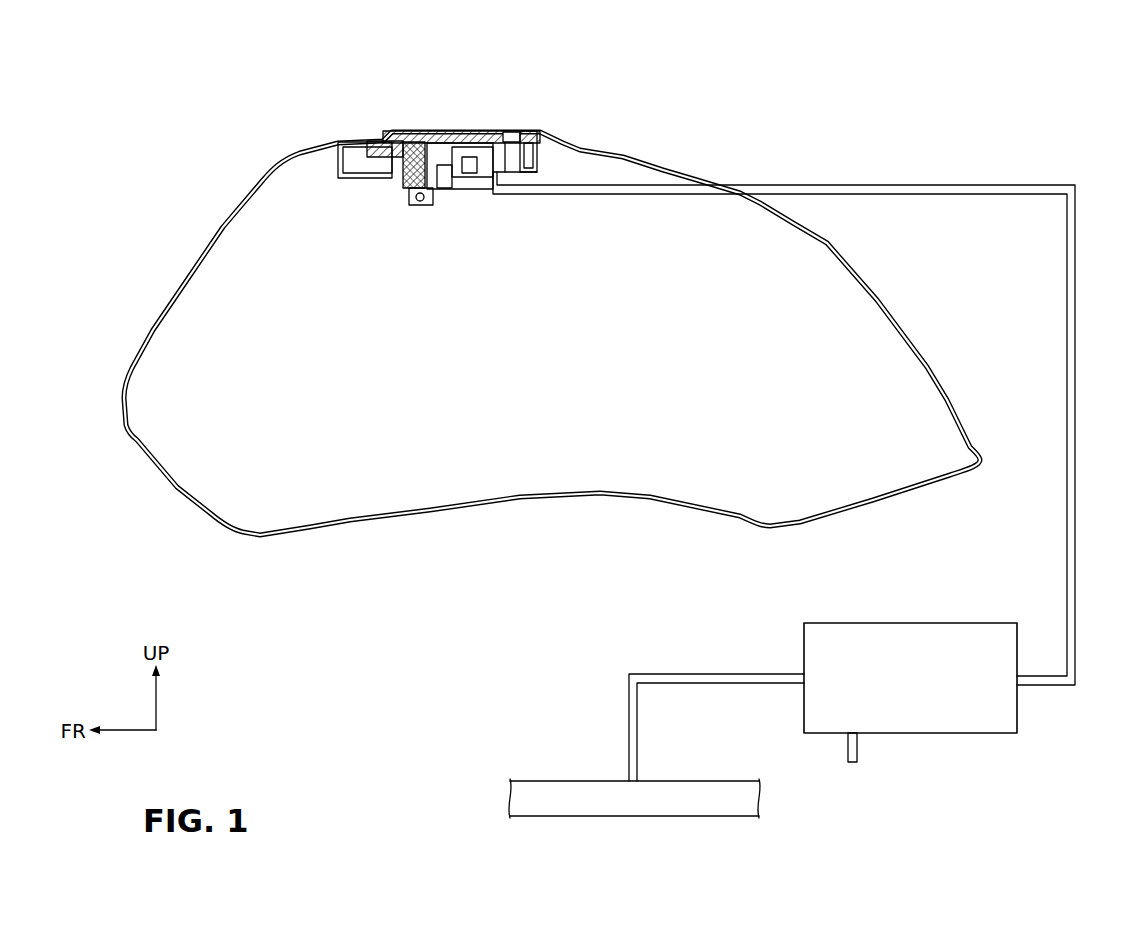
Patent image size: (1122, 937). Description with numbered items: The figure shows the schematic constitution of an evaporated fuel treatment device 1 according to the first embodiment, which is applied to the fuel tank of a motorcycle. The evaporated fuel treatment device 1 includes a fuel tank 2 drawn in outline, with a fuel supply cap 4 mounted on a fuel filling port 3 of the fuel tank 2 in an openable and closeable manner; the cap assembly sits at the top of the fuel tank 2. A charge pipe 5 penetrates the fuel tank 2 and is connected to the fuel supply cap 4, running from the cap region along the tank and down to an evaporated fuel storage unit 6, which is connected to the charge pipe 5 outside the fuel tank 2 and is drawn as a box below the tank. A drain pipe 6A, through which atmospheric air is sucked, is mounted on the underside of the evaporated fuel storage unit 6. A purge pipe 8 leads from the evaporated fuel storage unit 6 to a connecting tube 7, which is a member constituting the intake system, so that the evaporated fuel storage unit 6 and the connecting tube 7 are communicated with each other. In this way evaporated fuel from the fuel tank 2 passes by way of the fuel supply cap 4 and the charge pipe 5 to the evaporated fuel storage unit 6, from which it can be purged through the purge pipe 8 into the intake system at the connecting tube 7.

The evaporated fuel treatment device 1 is at (835, 106).
The fuel tank 2 is at (603, 148).
The fuel filling port 3 is at (400, 190).
The fuel supply cap 4 is at (471, 125).
The charge pipe 5 is at (947, 184).
The evaporated fuel storage unit 6 is at (935, 623).
The drain pipe 6A is at (857, 752).
The connecting tube 7 is at (706, 780).
The purge pipe 8 is at (677, 673).